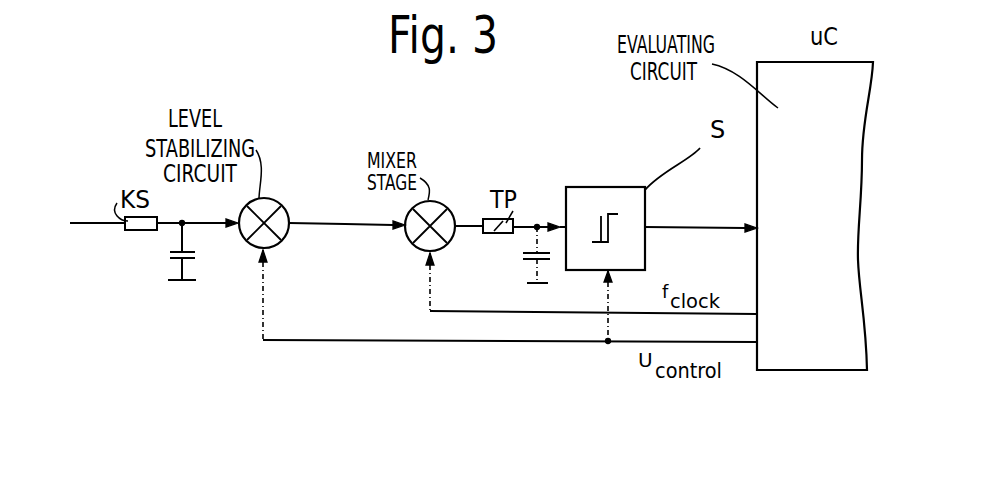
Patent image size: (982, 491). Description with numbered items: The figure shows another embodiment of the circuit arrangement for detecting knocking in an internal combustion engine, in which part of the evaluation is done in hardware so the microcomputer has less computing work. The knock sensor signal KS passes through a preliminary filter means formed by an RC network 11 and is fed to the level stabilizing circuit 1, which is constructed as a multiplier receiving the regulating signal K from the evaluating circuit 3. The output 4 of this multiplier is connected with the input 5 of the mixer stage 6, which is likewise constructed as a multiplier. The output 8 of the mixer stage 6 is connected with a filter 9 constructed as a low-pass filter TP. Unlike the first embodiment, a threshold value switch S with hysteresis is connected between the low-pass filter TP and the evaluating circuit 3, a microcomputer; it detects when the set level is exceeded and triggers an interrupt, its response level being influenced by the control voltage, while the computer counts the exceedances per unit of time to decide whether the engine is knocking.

The level stabilizing circuit 1 is at (267, 190).
The evaluating circuit 3 is at (829, 352).
The output 4 is at (305, 224).
The input 5 is at (374, 226).
The mixer stage 6 is at (430, 192).
The output 8 is at (472, 228).
The filter 9 is at (540, 200).
The RC network 11 is at (157, 245).